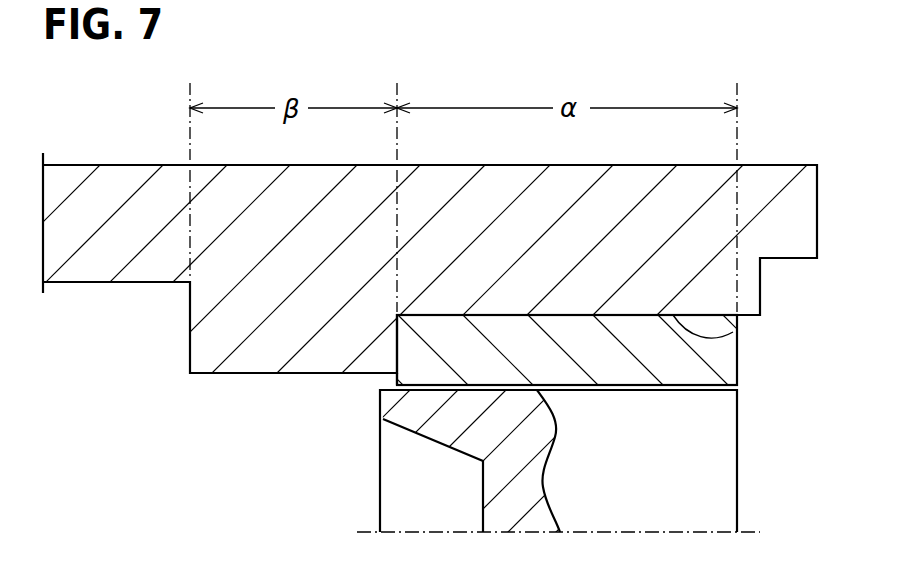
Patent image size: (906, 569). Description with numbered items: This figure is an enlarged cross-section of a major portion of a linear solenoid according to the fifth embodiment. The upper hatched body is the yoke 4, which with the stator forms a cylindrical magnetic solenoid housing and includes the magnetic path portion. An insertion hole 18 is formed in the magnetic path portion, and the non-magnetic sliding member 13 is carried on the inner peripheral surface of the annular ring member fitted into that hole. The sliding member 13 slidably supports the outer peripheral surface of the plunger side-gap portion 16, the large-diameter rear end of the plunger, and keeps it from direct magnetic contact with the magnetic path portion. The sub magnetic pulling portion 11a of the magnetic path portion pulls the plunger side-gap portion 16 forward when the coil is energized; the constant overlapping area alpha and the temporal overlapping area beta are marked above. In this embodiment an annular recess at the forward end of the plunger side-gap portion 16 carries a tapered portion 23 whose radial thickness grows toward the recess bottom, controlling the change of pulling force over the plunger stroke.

The yoke 4 is at (121, 183).
The sliding member 13 is at (710, 357).
The insertion hole 18 is at (733, 332).
The plunger side-gap portion 16 is at (703, 463).
The tapered portion 23 is at (428, 438).
The sub magnetic pulling portion 11a is at (372, 383).